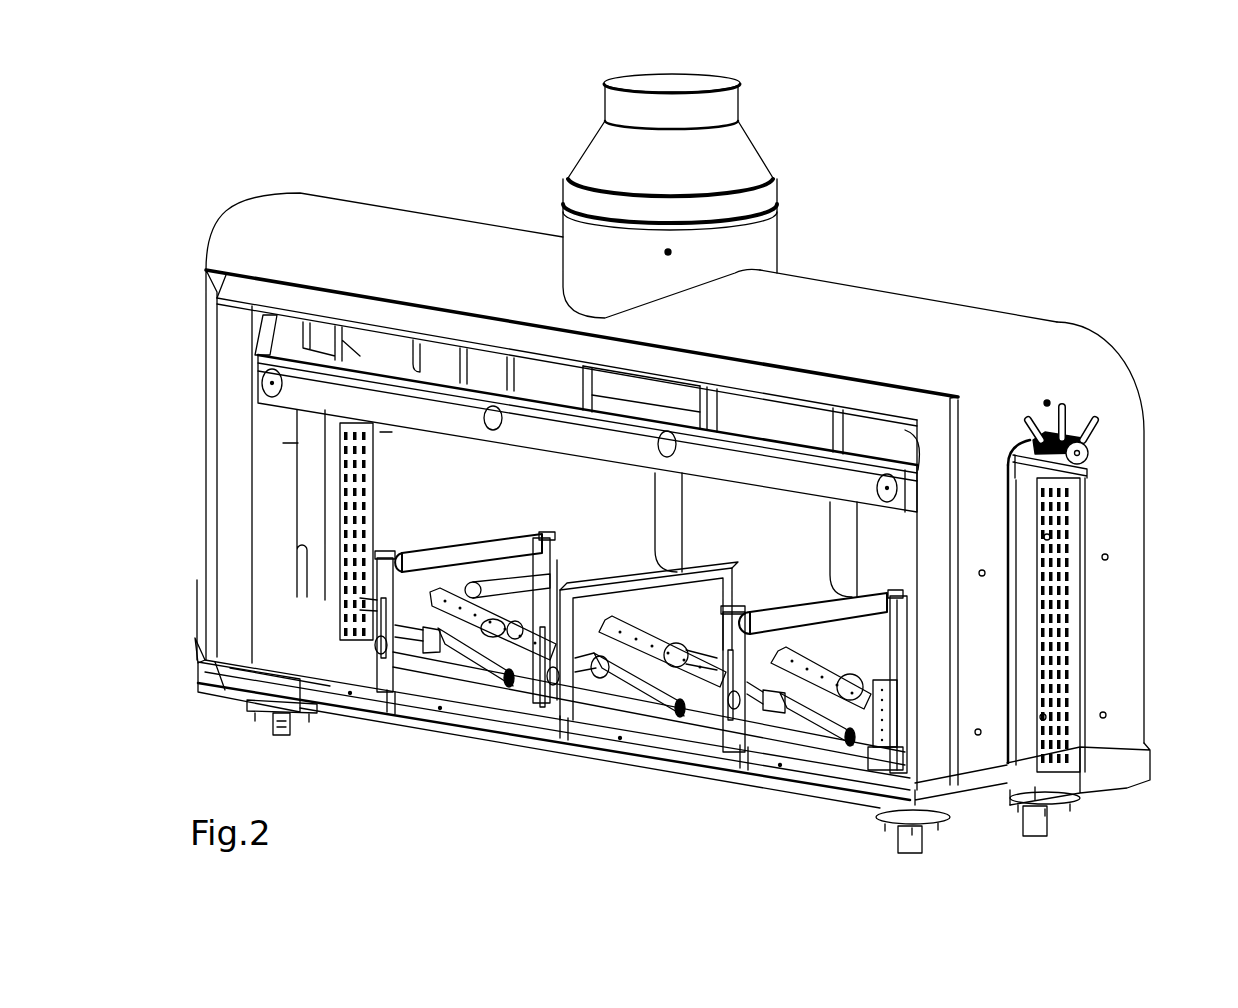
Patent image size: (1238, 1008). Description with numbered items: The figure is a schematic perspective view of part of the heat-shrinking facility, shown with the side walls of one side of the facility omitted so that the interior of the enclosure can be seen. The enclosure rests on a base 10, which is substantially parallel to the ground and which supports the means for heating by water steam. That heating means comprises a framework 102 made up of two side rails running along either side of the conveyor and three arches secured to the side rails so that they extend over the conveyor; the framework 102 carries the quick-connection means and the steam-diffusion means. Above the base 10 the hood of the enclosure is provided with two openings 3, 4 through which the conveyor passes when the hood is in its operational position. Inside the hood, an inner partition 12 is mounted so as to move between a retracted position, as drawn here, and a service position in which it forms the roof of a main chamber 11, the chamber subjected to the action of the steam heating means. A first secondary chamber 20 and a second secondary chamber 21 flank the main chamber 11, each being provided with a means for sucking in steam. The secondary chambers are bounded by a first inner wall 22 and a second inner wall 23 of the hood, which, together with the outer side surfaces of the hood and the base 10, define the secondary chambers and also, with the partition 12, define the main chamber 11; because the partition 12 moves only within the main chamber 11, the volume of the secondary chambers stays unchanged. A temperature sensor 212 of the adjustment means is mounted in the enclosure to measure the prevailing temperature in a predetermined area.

The first secondary chamber 20 is at (233, 360).
The main chamber 11 is at (483, 516).
The inner partition 12 is at (848, 482).
The second secondary chamber 21 is at (932, 460).
The first inner wall 22 is at (268, 560).
The second inner wall 23 is at (922, 621).
The opening 3 is at (331, 623).
The base 10 is at (337, 695).
The temperature sensor 212 is at (497, 587).
The framework 102 is at (743, 687).
The opening 4 is at (1075, 751).